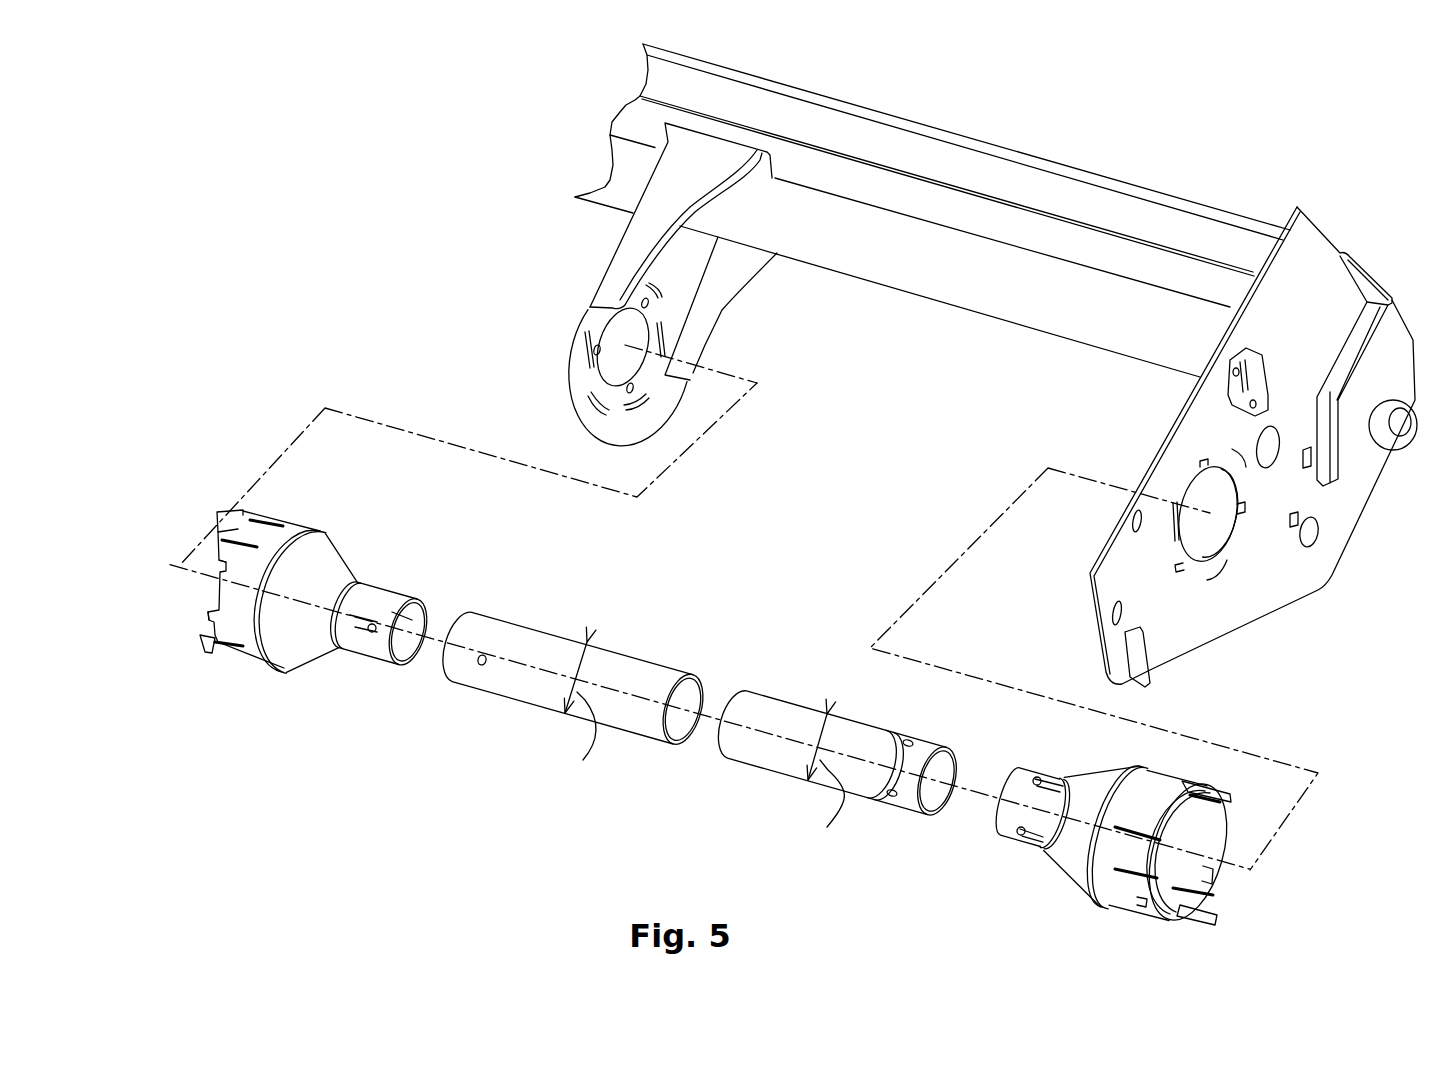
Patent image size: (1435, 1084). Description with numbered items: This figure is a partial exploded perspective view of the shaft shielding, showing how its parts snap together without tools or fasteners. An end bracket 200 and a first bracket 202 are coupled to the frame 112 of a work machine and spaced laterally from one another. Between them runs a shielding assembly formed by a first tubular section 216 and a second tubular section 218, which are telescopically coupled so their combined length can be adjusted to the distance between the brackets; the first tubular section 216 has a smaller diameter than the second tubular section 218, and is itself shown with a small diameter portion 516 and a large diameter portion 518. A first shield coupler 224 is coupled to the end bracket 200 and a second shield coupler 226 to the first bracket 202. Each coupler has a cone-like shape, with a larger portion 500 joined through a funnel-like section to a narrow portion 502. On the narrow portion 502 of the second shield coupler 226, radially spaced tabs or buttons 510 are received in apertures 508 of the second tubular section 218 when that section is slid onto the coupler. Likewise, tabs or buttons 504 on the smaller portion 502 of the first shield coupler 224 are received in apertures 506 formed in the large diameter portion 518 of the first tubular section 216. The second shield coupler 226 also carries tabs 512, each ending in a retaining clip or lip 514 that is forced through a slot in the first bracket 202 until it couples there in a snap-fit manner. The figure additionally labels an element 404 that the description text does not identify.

The frame 112 is at (988, 175).
The first bracket 202 is at (708, 303).
The end bracket 200 is at (1285, 565).
The larger portion 500 is at (742, 686).
The narrow portion 502 is at (355, 667).
The tabs or buttons 504 is at (1000, 805).
The second shield coupler 226 is at (305, 652).
The first shield coupler 224 is at (1157, 790).
The tabs or buttons 510 is at (398, 590).
The tabs 512 is at (262, 518).
The retaining clip or lip 514 is at (225, 505).
The castellated tab 404 is at (1260, 790).
The second tubular section 218 is at (625, 665).
The apertures 508 is at (515, 606).
The first tubular section 216 is at (845, 755).
The small diameter portion 516 is at (755, 765).
The large diameter portion 518 is at (934, 728).
The aperture 506 is at (904, 738).